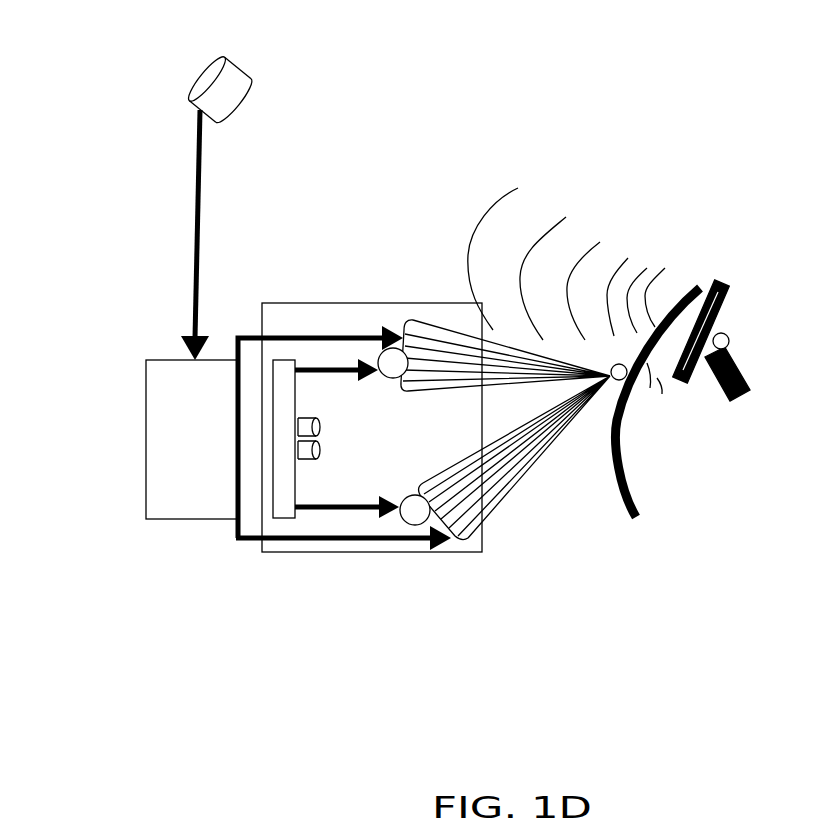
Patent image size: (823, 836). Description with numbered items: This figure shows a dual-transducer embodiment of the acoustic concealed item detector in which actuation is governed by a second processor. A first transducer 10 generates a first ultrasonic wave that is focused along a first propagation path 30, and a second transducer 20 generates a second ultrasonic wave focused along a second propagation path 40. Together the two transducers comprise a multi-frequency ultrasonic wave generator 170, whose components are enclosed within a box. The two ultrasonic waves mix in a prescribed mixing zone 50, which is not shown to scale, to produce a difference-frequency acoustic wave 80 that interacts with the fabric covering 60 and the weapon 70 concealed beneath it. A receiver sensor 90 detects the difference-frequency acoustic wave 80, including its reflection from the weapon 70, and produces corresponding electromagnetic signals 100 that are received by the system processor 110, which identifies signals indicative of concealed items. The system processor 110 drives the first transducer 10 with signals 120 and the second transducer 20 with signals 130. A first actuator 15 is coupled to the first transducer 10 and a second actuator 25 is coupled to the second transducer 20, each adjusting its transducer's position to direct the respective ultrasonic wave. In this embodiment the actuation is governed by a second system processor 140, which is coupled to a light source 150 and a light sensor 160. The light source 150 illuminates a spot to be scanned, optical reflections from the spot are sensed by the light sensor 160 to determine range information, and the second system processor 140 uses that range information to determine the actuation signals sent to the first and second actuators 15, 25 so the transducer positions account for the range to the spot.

The first transducer 10 is at (405, 332).
The first actuator 15 is at (403, 382).
The second transducer 20 is at (453, 533).
The second actuator 25 is at (430, 493).
The first propagation path 30 is at (455, 312).
The second propagation path 40 is at (494, 540).
The prescribed mixing zone 50 is at (636, 385).
The fabric covering 60 is at (613, 385).
The weapon 70 is at (712, 282).
The difference-frequency acoustic wave 80 is at (661, 350).
The receiver sensor 90 is at (203, 72).
The electromagnetic signals 100 is at (193, 230).
The system processor 110 is at (146, 438).
The signals driving first transducer 120 is at (347, 333).
The signals driving second transducer 130 is at (365, 540).
The second system processor 140 is at (272, 485).
The light source 150 is at (323, 427).
The light sensor 160 is at (325, 450).
The multi-frequency ultrasonic wave generator 170 is at (413, 550).